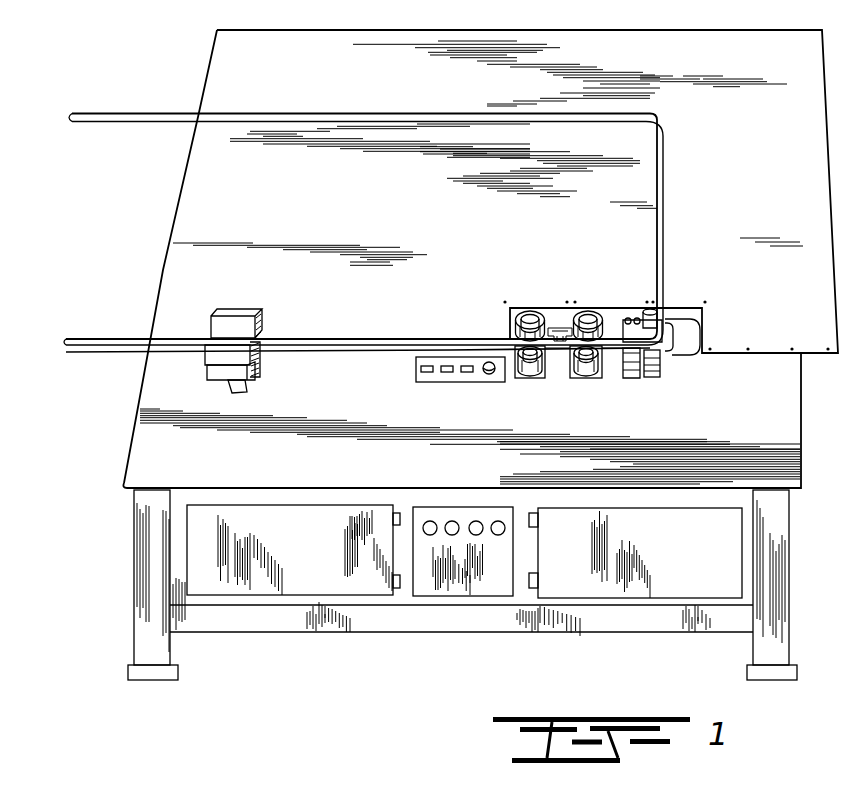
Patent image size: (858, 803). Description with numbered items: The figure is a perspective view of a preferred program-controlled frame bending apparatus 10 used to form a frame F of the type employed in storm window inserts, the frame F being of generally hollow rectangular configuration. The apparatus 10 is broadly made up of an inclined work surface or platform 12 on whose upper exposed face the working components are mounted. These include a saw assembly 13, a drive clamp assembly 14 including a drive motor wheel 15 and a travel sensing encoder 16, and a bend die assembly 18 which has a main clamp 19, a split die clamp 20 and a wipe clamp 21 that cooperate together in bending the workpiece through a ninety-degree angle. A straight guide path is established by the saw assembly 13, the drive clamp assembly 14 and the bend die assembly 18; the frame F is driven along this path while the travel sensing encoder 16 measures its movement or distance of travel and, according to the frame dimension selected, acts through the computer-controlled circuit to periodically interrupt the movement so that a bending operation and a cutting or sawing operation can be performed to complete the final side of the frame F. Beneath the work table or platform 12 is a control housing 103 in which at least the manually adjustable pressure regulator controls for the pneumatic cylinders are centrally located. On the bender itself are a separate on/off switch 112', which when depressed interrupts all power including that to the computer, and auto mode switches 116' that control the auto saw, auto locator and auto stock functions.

The program-controlled frame bending apparatus 10 is at (169, 211).
The inclined work surface or platform 12 is at (801, 418).
The saw assembly 13 is at (243, 311).
The drive clamp assembly 14 is at (552, 378).
The drive motor wheel 15 is at (522, 310).
The travel sensing encoder 16 is at (585, 310).
The bend die assembly 18 is at (668, 381).
The main clamp 19 is at (632, 380).
The split die clamp 20 is at (661, 316).
The wipe clamp 21 is at (662, 362).
The control housing 103 is at (470, 597).
The on/off switch 112' is at (470, 388).
The auto mode switches 116' is at (456, 343).
The frame F is at (452, 113).